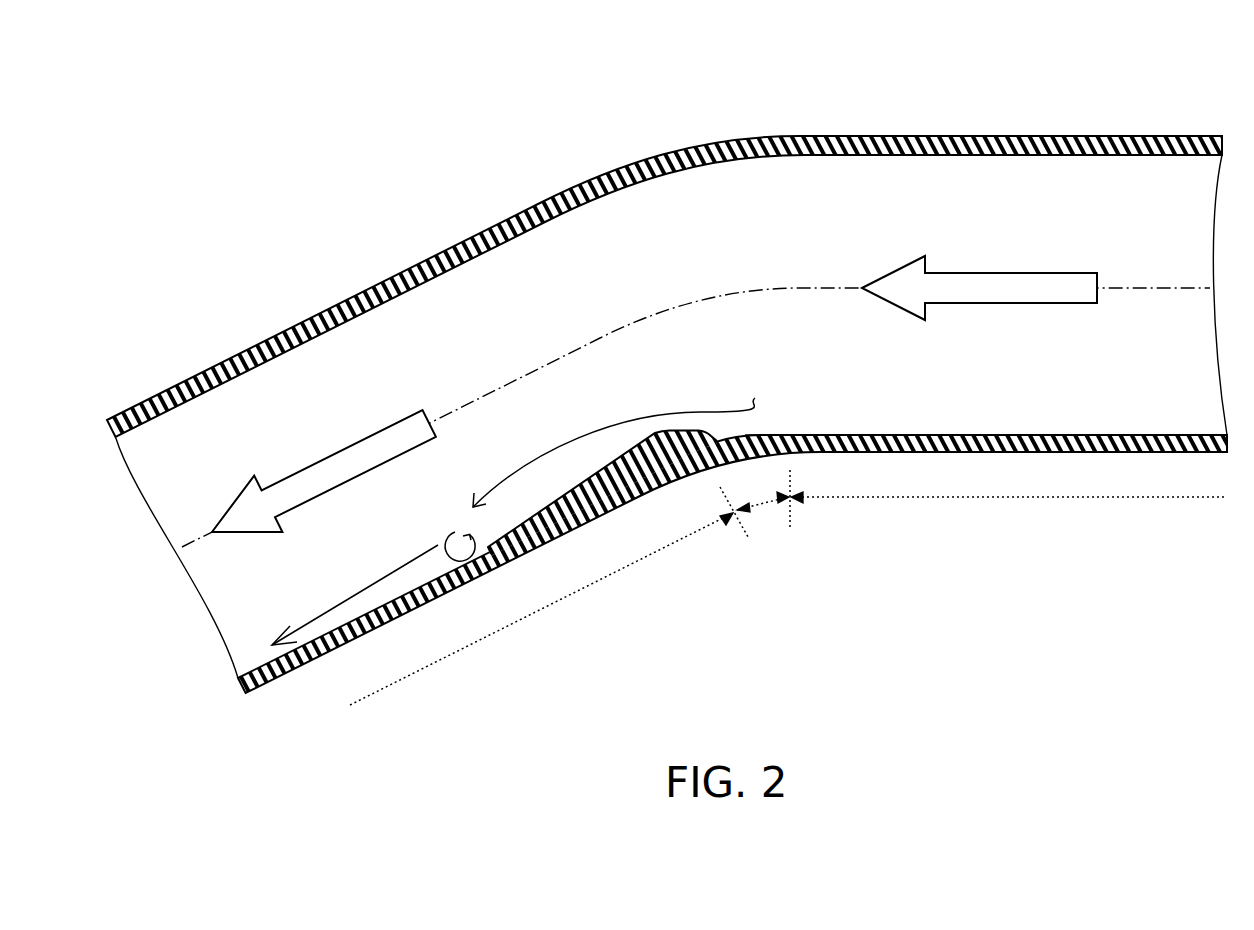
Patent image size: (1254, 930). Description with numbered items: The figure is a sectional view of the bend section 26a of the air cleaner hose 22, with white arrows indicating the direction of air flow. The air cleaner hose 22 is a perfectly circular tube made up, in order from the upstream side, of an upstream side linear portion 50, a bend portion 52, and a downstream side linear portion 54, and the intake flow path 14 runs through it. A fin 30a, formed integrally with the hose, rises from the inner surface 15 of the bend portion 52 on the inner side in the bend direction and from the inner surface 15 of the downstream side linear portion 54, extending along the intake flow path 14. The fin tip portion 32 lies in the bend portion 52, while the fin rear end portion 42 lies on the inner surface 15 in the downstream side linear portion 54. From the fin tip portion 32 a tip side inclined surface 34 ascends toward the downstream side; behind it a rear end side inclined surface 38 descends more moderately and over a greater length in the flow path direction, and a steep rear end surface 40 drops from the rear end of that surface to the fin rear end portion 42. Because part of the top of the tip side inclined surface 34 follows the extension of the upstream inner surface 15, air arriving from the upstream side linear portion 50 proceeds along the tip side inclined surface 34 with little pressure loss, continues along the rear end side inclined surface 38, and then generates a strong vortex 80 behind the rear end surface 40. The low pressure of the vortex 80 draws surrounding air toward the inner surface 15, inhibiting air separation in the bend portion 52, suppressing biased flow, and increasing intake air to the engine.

The intake flow path 14 is at (1040, 195).
The inner surface 15 is at (1005, 434).
The air cleaner hose 22 is at (920, 131).
The bend section 26a is at (672, 127).
The fin 30a is at (612, 450).
The fin tip portion 32 is at (732, 434).
The tip side inclined surface 34 is at (712, 431).
The rear end side inclined surface 38 is at (557, 500).
The rear end surface 40 is at (487, 546).
The fin rear end portion 42 is at (489, 576).
The upstream side linear portion 50 is at (965, 500).
The bend portion 52 is at (770, 510).
The downstream side linear portion 54 is at (549, 607).
The vortex 80 is at (458, 528).